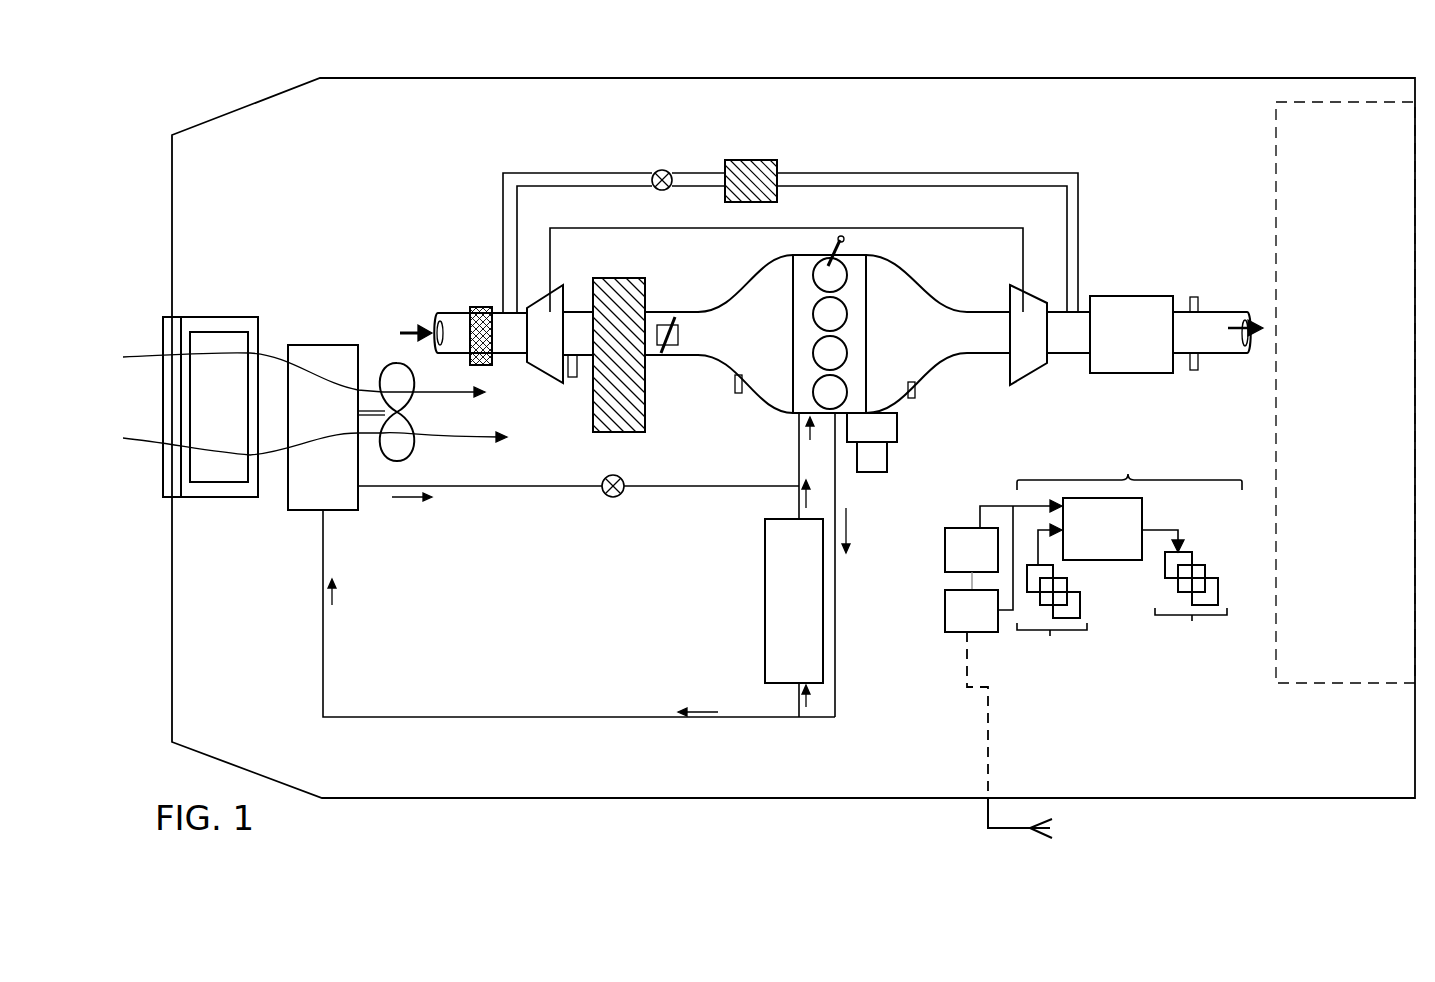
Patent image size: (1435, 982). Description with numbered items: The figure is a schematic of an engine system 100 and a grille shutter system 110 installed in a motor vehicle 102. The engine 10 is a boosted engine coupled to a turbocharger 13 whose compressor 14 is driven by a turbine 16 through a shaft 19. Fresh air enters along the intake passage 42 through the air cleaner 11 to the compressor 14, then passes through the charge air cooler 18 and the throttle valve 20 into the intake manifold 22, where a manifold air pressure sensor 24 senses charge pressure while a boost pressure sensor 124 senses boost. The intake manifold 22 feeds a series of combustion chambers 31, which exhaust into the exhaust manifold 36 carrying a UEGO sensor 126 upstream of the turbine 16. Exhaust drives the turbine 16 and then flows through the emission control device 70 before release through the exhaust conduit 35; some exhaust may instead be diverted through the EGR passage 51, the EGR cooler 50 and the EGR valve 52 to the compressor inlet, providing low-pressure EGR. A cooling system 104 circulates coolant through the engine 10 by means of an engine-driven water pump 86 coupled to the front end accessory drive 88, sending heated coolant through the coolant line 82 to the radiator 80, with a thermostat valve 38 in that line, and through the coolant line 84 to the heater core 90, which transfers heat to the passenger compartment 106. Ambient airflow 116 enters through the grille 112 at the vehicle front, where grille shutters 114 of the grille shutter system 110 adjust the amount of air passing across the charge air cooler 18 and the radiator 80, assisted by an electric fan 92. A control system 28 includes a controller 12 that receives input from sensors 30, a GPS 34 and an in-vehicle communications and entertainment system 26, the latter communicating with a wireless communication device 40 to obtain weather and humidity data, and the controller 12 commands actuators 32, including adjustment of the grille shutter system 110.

The engine 10 is at (867, 320).
The air cleaner 11 is at (479, 307).
The controller 12 is at (1114, 541).
The turbocharger 13 is at (603, 260).
The compressor 14 is at (534, 343).
The turbine 16 is at (1017, 344).
The charge air cooler 18 is at (618, 278).
The shaft 19 is at (948, 229).
The throttle valve 20 is at (678, 337).
The intake manifold 22 is at (746, 344).
The manifold air pressure sensor 24 is at (735, 381).
The in-vehicle communications and entertainment system 26 is at (983, 621).
The control system 28 is at (1129, 460).
The sensors 30 is at (1055, 603).
The combustion chambers 31 is at (840, 268).
The actuators 32 is at (1195, 596).
The GPS 34 is at (983, 560).
The exhaust conduit 35 is at (1228, 314).
The exhaust manifold 36 is at (909, 344).
The thermostat valve 38 is at (613, 498).
The wireless communication device 40 is at (1052, 838).
The intake passage 42 is at (463, 356).
The EGR cooler 50 is at (760, 160).
The EGR passage 51 is at (858, 173).
The EGR valve 52 is at (666, 170).
The emission control device 70 is at (1112, 296).
The radiator 80 is at (323, 427).
The coolant line 82 is at (718, 482).
The coolant line 84 is at (798, 514).
The engine-driven water pump 86 is at (888, 463).
The front end accessory drive 88 is at (897, 423).
The heater core 90 is at (794, 601).
The electric fan 92 is at (405, 453).
The engine system 100 is at (1165, 128).
The motor vehicle 102 is at (763, 78).
The cooling system 104 is at (885, 632).
The passenger compartment 106 is at (1345, 392).
The grille shutter system 110 is at (210, 498).
The grille 112 is at (165, 490).
The grille shutters 114 is at (202, 416).
The ambient airflow 116 is at (133, 358).
The boost pressure sensor 124 is at (579, 371).
The UEGO sensor 126 is at (915, 386).